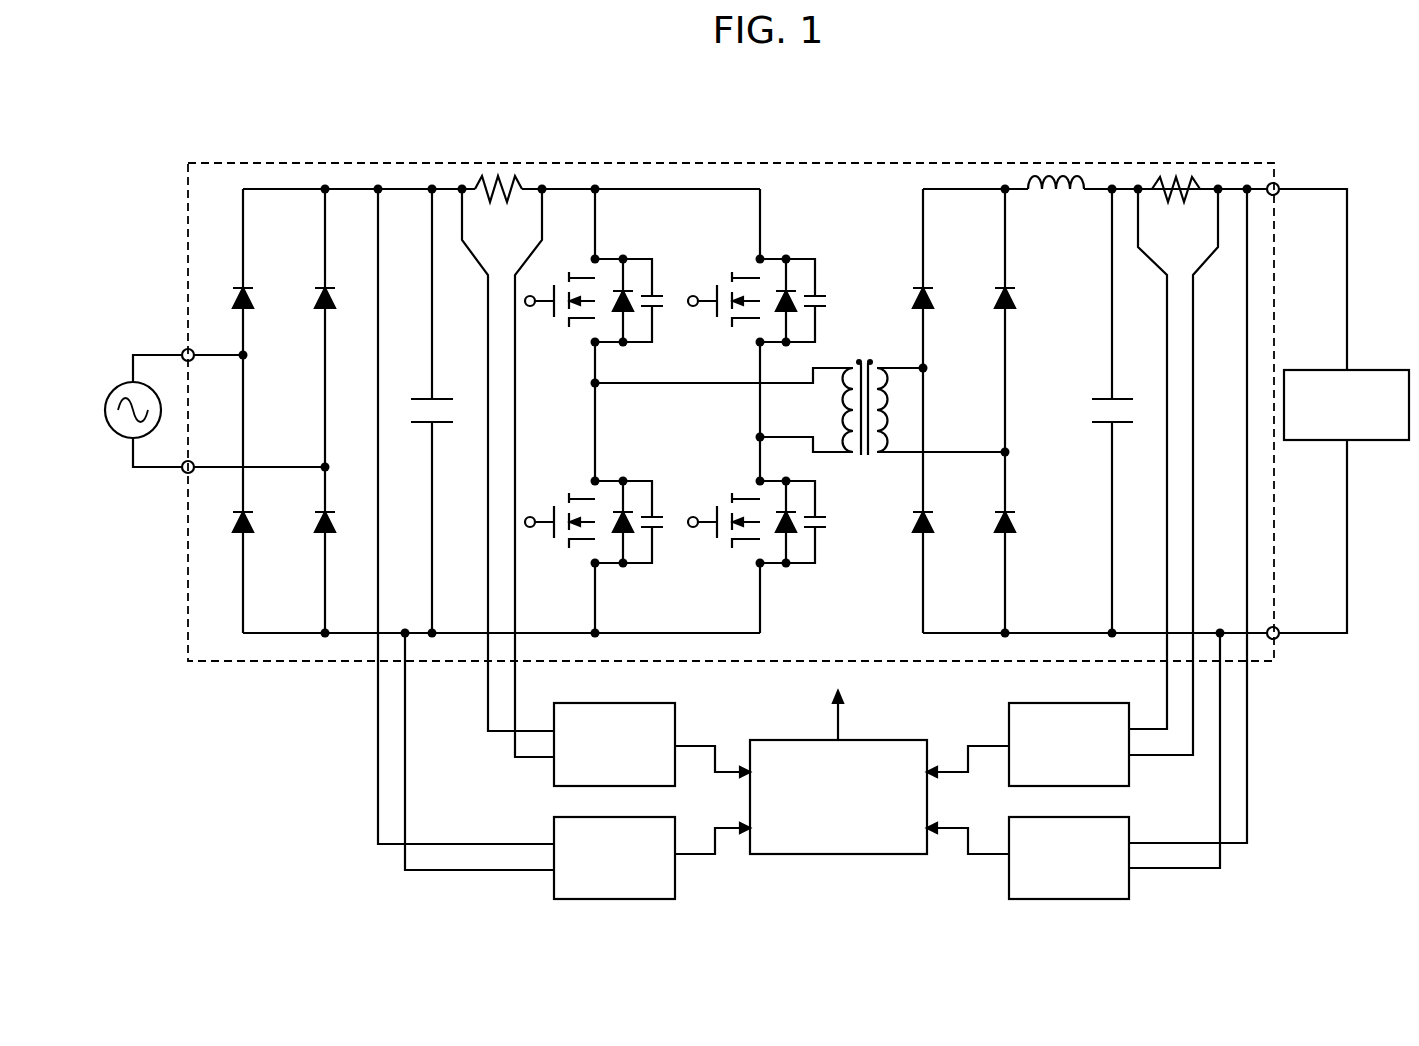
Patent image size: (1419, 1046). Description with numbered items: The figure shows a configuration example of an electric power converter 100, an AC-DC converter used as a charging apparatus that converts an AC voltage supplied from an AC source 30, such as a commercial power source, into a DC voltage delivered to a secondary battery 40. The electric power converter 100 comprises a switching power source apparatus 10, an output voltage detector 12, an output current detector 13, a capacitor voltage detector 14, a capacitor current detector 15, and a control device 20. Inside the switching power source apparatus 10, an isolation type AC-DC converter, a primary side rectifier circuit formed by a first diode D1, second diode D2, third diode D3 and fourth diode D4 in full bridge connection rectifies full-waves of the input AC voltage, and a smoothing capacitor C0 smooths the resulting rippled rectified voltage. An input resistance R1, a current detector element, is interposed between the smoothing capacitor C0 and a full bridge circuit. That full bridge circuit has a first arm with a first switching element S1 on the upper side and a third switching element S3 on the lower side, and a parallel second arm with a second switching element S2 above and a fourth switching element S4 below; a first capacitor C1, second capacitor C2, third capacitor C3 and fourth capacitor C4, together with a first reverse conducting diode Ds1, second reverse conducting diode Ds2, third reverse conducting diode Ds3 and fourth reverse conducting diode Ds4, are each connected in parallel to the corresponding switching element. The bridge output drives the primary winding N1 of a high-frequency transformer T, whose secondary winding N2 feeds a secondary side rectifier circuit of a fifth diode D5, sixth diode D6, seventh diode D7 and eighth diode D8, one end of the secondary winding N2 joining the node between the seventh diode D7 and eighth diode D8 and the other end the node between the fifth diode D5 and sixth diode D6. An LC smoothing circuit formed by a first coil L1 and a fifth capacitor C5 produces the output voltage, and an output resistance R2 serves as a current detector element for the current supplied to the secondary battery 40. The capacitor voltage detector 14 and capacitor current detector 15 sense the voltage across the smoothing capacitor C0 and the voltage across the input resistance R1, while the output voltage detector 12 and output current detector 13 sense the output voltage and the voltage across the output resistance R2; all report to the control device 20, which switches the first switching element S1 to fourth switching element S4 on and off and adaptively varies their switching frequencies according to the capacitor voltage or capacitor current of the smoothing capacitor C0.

The electric power converter 100 is at (843, 157).
The switching power source apparatus 10 is at (1232, 157).
The AC source 30 is at (130, 382).
The secondary battery 40 is at (1366, 370).
The control device 20 is at (893, 741).
The capacitor current detector 15 is at (627, 704).
The capacitor voltage detector 14 is at (656, 818).
The output current detector 13 is at (1084, 704).
The output voltage detector 12 is at (1095, 818).
The first diode D1 is at (227, 298).
The second diode D2 is at (309, 298).
The third diode D3 is at (227, 522).
The fourth diode D4 is at (309, 522).
The fifth diode D5 is at (988, 298).
The sixth diode D6 is at (988, 523).
The seventh diode D7 is at (906, 298).
The eighth diode D8 is at (907, 523).
The smoothing capacitor C0 is at (425, 411).
The first capacitor C1 is at (640, 300).
The second capacitor C2 is at (804, 300).
The third capacitor C3 is at (641, 522).
The fourth capacitor C4 is at (806, 522).
The fifth capacitor C5 is at (1096, 411).
The input resistance R1 is at (498, 205).
The output resistance R2 is at (1176, 207).
The first coil L1 is at (1056, 199).
The transformer T is at (864, 393).
The primary winding N1 is at (834, 410).
The secondary winding N2 is at (899, 410).
The first switching element S1 is at (560, 288).
The second switching element S2 is at (724, 288).
The third switching element S3 is at (560, 509).
The fourth switching element S4 is at (724, 509).
The first reverse conducting diode Ds1 is at (628, 288).
The second reverse conducting diode Ds2 is at (801, 290).
The third reverse conducting diode Ds3 is at (632, 498).
The fourth reverse conducting diode Ds4 is at (798, 510).